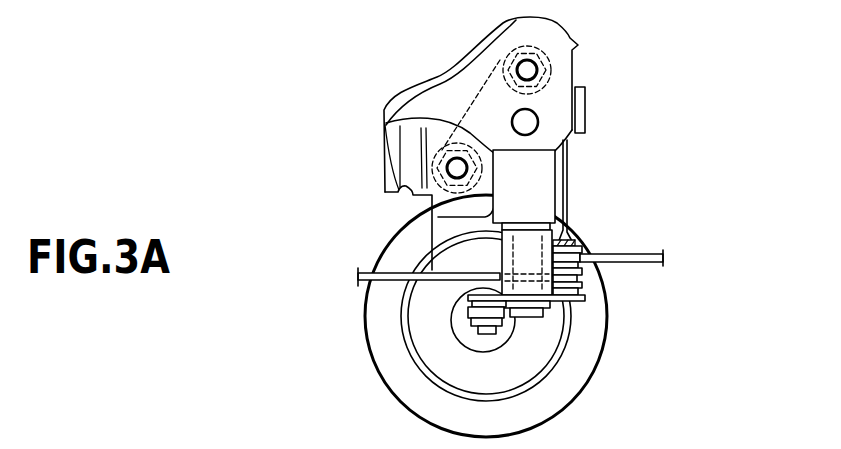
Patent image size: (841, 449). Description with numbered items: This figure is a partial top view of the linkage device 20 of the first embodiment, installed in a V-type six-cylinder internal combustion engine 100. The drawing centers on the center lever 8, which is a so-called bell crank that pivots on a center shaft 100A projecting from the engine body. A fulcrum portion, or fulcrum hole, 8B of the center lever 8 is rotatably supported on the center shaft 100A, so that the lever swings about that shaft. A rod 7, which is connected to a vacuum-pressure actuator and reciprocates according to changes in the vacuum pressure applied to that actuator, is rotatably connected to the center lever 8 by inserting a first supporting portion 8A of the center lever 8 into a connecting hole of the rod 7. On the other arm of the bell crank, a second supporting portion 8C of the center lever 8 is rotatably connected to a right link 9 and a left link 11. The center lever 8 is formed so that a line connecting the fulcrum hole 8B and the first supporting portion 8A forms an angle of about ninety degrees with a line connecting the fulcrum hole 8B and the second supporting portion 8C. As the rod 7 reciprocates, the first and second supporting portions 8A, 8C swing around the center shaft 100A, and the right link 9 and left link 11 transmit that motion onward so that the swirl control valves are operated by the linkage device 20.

The internal combustion engine 100 is at (577, 150).
The center shaft 100A is at (532, 316).
The left link 11 is at (368, 273).
The right link 9 is at (640, 254).
The linkage device 20 is at (358, 343).
The rod 7 is at (468, 318).
The center lever 8 is at (578, 294).
The first supporting portion 8A is at (487, 337).
The fulcrum portion 8B is at (556, 300).
The second supporting portion 8C is at (570, 242).